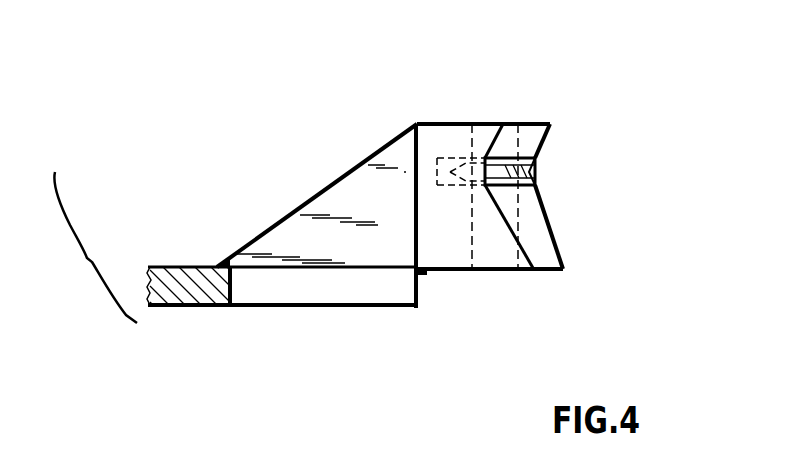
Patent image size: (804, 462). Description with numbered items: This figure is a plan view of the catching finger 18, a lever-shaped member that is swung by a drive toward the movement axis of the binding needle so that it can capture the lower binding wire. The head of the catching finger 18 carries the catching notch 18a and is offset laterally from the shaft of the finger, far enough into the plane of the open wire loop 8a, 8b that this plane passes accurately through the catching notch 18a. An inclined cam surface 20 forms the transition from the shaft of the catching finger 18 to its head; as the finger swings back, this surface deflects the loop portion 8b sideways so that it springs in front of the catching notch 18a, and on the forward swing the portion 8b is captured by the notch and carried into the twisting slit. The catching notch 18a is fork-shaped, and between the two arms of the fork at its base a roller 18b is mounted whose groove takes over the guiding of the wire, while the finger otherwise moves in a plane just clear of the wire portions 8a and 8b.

The wire loop portion 8a is at (73, 162).
The wire loop portion 8b is at (338, 163).
The catching finger 18 is at (186, 297).
The catching notch 18a is at (546, 172).
The roller 18b is at (503, 124).
The inclined cam surface 20 is at (285, 200).